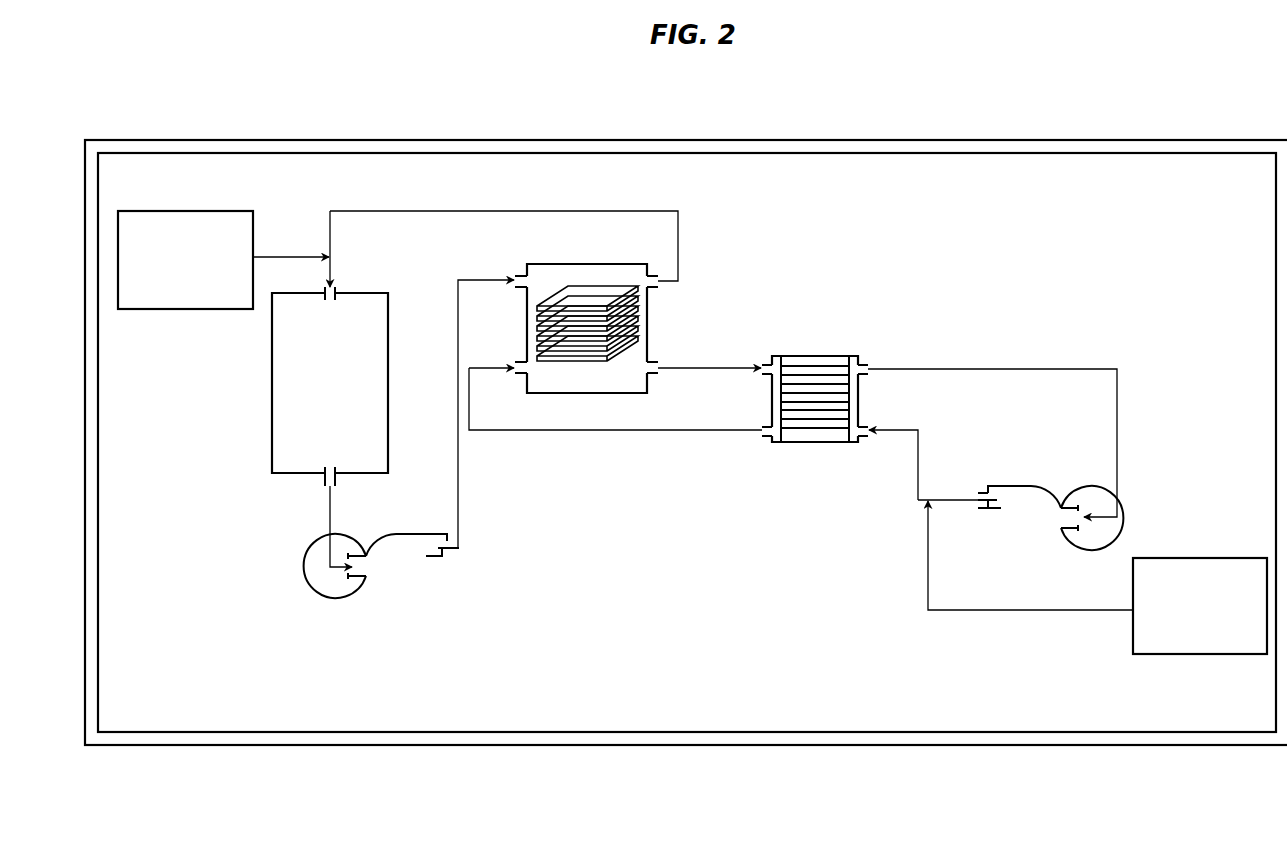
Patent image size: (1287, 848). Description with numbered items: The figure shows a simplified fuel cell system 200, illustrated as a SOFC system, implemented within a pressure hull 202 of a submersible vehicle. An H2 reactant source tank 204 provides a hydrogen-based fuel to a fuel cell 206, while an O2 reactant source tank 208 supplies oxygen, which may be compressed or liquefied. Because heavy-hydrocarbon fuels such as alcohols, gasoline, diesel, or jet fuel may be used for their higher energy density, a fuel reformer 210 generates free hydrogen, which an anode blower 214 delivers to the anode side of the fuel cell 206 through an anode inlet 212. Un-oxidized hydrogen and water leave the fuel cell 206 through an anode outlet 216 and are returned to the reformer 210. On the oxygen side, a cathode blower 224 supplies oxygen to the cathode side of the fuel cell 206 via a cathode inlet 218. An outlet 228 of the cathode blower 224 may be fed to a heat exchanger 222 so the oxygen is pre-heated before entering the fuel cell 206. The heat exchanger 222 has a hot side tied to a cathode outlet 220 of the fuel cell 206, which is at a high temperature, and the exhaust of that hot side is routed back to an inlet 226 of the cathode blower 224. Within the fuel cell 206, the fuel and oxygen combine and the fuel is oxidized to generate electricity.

The fuel cell system 200 is at (499, 92).
The pressure hull 202 is at (1026, 139).
The H2 reactant source tank 204 is at (185, 260).
The fuel cell 206 is at (588, 328).
The O2 reactant source tank 208 is at (1200, 606).
The fuel reformer 210 is at (330, 386).
The anode inlet 212 is at (507, 287).
The anode blower 214 is at (418, 534).
The anode outlet 216 is at (656, 287).
The cathode inlet 218 is at (507, 359).
The cathode outlet 220 is at (656, 359).
The heat exchanger 222 is at (823, 356).
The cathode blower 224 is at (1034, 486).
The inlet of cathode blower 226 is at (1083, 531).
The outlet of cathode blower 228 is at (977, 505).